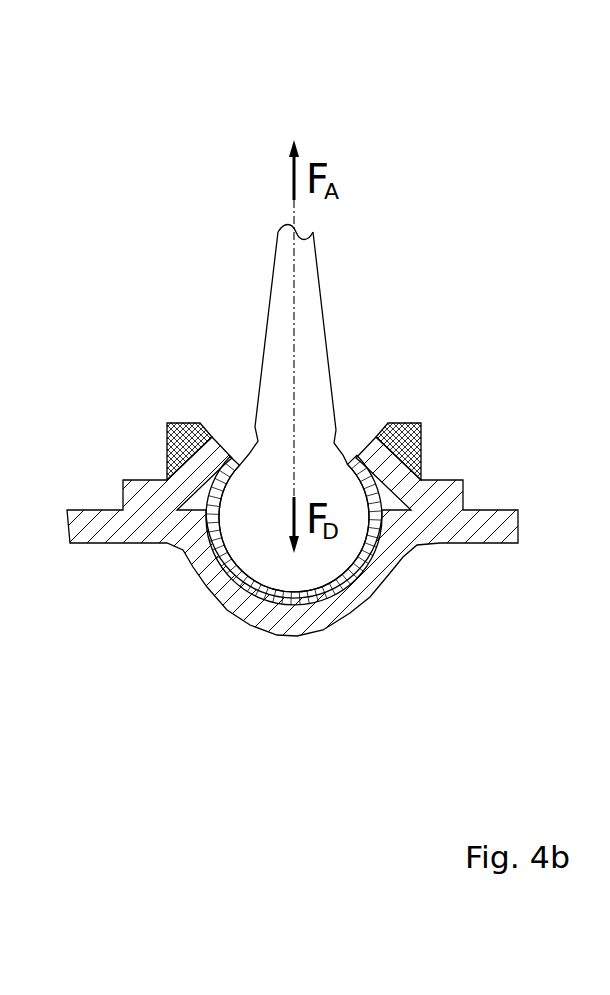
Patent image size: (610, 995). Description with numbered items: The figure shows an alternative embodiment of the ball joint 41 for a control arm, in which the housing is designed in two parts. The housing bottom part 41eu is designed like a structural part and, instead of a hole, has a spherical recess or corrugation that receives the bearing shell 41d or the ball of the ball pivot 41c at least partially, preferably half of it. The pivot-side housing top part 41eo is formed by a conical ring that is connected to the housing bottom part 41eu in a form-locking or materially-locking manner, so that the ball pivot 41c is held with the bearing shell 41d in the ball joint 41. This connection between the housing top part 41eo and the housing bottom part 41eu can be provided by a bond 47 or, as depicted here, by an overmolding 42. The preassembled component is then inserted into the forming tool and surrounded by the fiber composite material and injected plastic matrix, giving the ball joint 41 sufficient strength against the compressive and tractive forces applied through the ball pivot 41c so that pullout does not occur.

The ball joint 41 is at (445, 262).
The ball pivot 41c is at (273, 373).
The bearing shell 41d is at (206, 556).
The housing top part 41eo is at (446, 482).
The housing bottom part 41eu is at (445, 512).
The overmolding 42 is at (167, 478).
The bond 47 is at (150, 522).